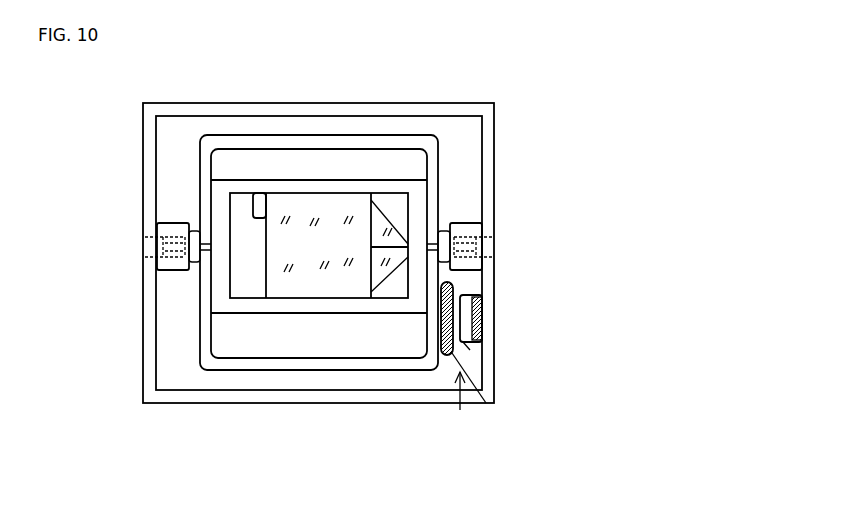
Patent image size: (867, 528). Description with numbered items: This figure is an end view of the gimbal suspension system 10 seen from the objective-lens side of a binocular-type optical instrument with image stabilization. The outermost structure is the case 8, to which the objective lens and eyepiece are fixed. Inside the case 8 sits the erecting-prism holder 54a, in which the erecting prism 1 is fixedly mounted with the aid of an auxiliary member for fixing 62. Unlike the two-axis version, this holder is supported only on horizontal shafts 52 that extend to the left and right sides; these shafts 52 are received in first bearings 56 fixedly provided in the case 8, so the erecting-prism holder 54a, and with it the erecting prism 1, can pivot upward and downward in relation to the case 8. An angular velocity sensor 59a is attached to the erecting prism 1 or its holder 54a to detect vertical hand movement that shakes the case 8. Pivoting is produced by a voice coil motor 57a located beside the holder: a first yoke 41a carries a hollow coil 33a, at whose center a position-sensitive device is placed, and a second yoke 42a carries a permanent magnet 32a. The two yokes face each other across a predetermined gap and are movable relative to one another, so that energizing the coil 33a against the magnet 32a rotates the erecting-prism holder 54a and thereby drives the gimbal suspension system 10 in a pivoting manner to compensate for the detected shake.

The gimbal suspension system 10 is at (184, 153).
The case 8 is at (463, 116).
The erecting prism 1 is at (290, 205).
The erecting-prism holder 54a is at (207, 349).
The auxiliary member for fixing 62 is at (343, 306).
The angular velocity sensor 59a is at (258, 219).
The first bearings 56 is at (165, 223).
The horizontal shafts 52 is at (165, 247).
The first yoke 41a is at (447, 357).
The second yoke 42a is at (483, 298).
The permanent magnet 32a is at (467, 345).
The hollow coil 33a is at (486, 403).
The voice coil motor 57a is at (460, 410).